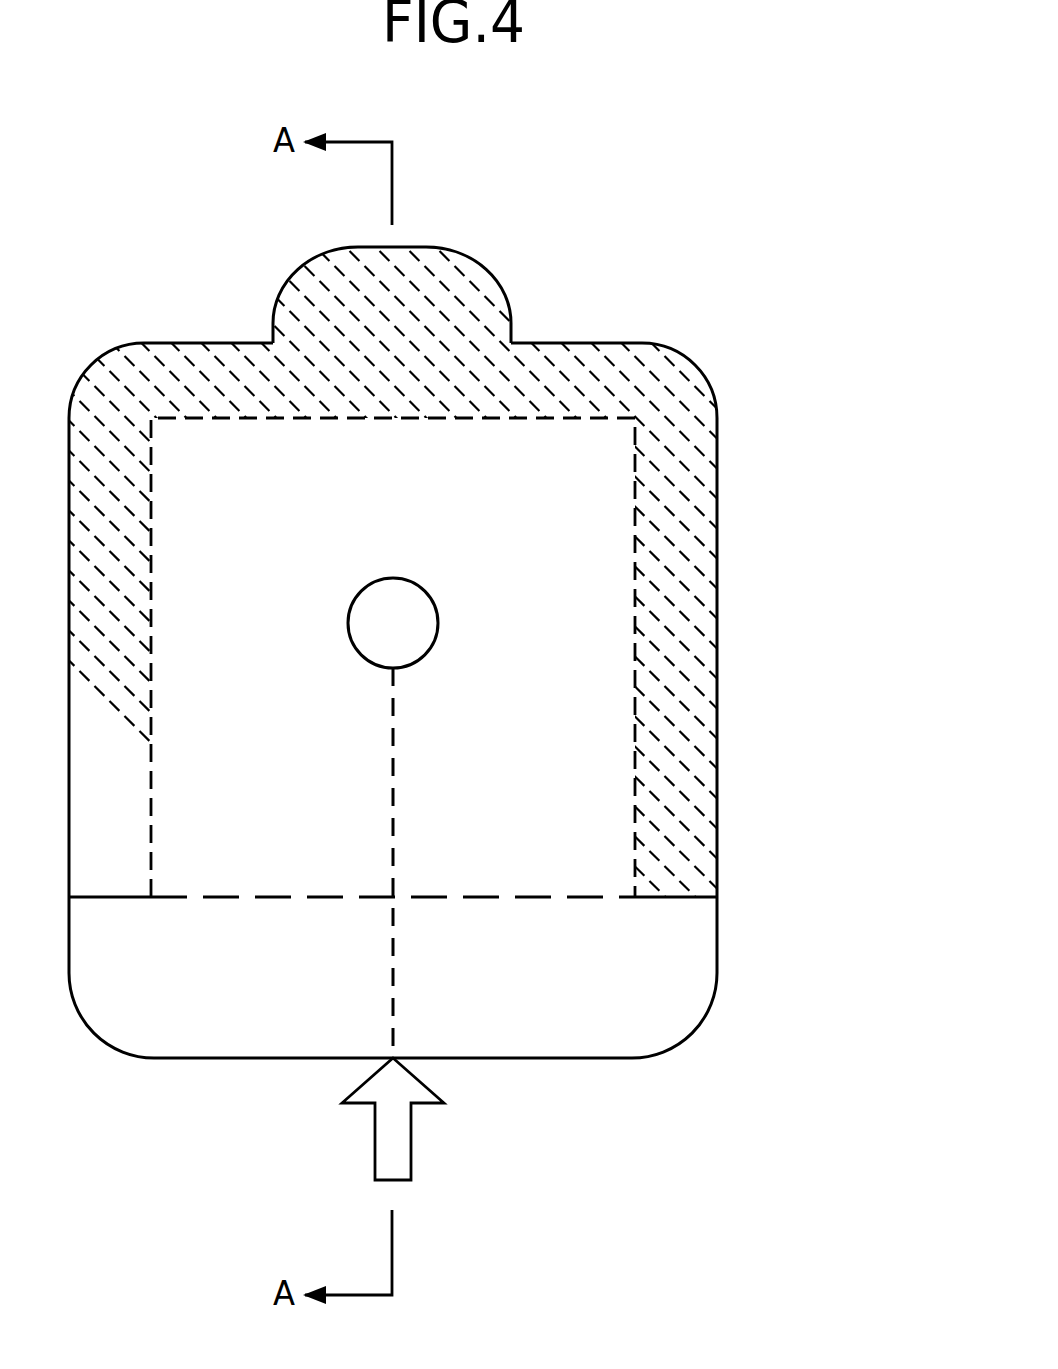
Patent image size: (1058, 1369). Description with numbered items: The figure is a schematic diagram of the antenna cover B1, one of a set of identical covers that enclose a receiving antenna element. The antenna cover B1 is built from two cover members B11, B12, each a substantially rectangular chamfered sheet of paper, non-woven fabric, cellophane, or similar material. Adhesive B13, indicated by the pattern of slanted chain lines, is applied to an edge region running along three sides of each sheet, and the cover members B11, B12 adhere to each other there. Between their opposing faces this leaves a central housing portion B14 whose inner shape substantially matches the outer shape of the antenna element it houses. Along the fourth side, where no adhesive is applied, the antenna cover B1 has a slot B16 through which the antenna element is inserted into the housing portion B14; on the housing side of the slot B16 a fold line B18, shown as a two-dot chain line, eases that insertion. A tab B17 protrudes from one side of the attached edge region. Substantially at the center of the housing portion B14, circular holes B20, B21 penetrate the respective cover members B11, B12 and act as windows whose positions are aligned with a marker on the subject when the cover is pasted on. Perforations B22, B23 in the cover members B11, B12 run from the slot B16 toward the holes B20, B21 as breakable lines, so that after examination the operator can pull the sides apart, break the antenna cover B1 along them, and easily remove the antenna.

The antenna cover B1 is at (716, 284).
The cover member B11 is at (482, 614).
The cover member B12 is at (711, 389).
The adhesive B13 is at (705, 495).
The housing portion B14 is at (615, 653).
The slot B16 is at (567, 1070).
The tab B17 is at (478, 258).
The fold line B18 is at (565, 900).
The circular hole B20 is at (439, 582).
The circular hole B21 is at (403, 578).
The perforation B22 is at (300, 863).
The perforation B23 is at (393, 783).